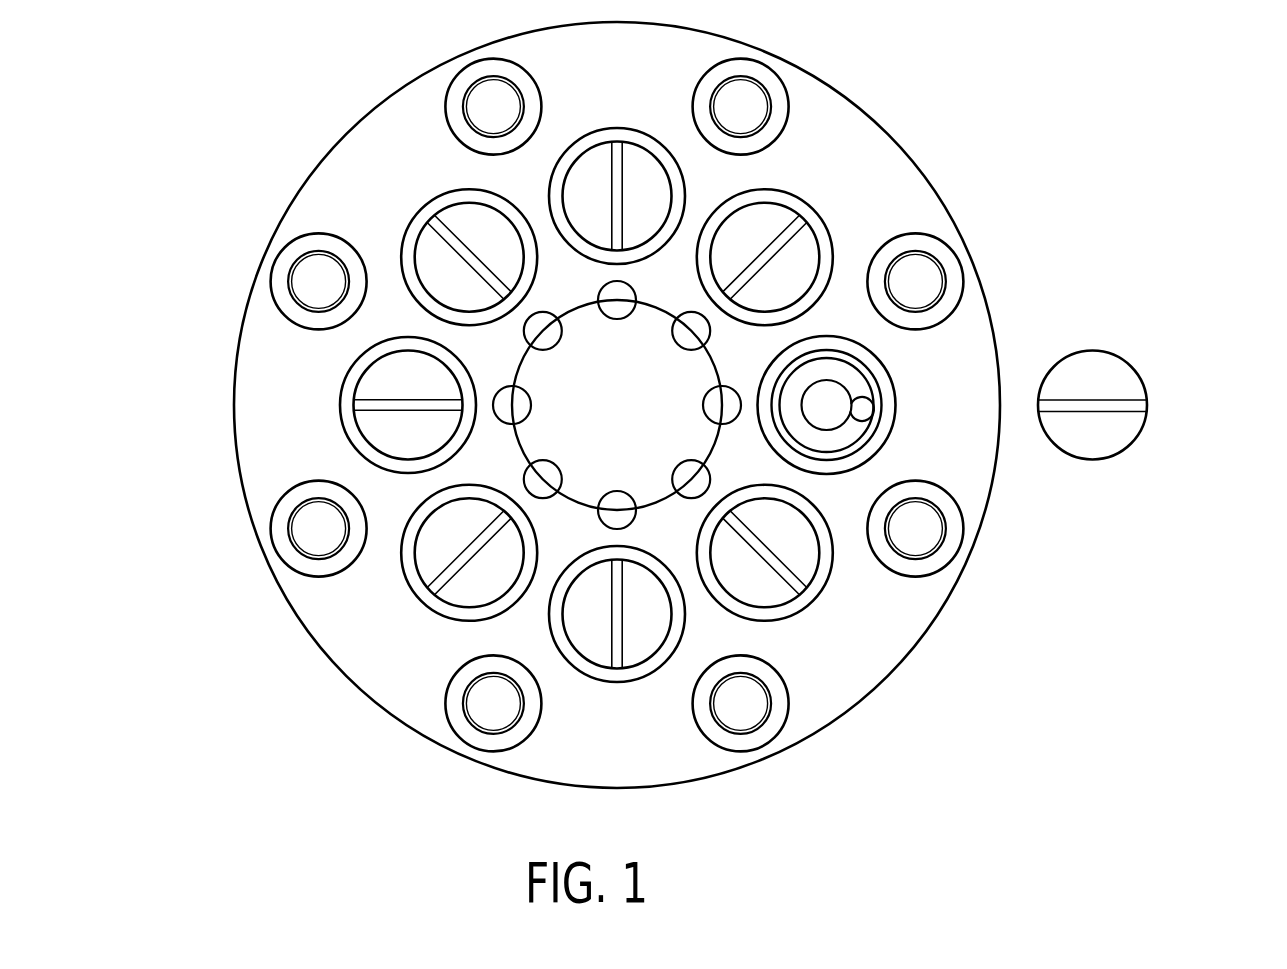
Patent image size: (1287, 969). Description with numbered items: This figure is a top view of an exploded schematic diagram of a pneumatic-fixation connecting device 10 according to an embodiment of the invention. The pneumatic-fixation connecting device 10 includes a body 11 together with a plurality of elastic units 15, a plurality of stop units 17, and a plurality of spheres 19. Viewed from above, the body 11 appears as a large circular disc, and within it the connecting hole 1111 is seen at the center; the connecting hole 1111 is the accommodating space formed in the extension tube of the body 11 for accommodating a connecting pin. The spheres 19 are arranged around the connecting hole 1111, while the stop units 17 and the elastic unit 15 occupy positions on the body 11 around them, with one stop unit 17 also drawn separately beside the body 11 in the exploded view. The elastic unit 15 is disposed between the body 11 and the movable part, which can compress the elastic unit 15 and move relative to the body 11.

The pneumatic-fixation connecting device 10 is at (237, 119).
The body 11 is at (908, 180).
The connecting hole 1111 is at (556, 378).
The spheres 19 is at (500, 400).
The elastic unit 15 is at (852, 398).
The stop unit 17 is at (805, 543).